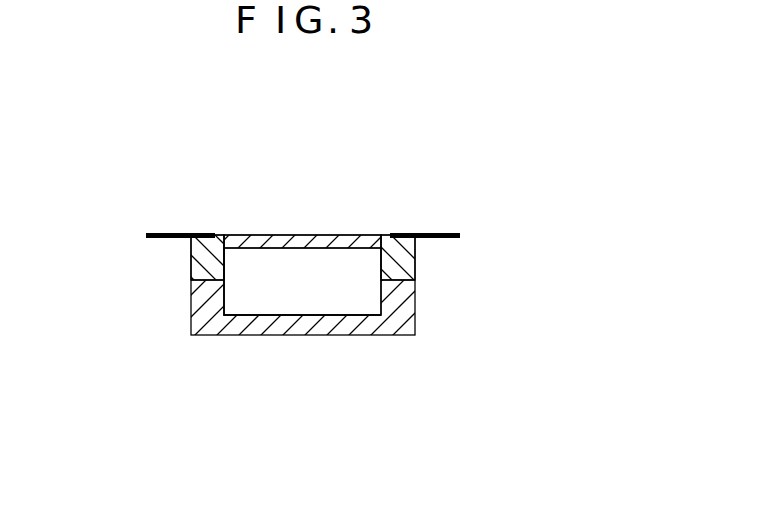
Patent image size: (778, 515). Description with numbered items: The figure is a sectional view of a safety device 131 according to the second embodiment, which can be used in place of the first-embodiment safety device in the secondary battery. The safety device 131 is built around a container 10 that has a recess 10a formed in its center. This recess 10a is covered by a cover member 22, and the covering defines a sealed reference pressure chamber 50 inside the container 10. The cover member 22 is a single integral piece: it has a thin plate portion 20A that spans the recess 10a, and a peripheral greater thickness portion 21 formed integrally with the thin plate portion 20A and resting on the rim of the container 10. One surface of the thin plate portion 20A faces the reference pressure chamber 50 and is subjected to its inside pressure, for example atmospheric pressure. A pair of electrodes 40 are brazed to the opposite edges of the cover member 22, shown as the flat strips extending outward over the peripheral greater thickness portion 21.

The safety device 131 is at (522, 108).
The container 10 is at (313, 327).
The recess 10a is at (257, 313).
The reference pressure chamber 50 is at (350, 292).
The cover member 22 is at (447, 127).
The thin plate portion 20A is at (320, 235).
The peripheral greater thickness portion 21 is at (399, 250).
The electrodes 40 is at (168, 233).